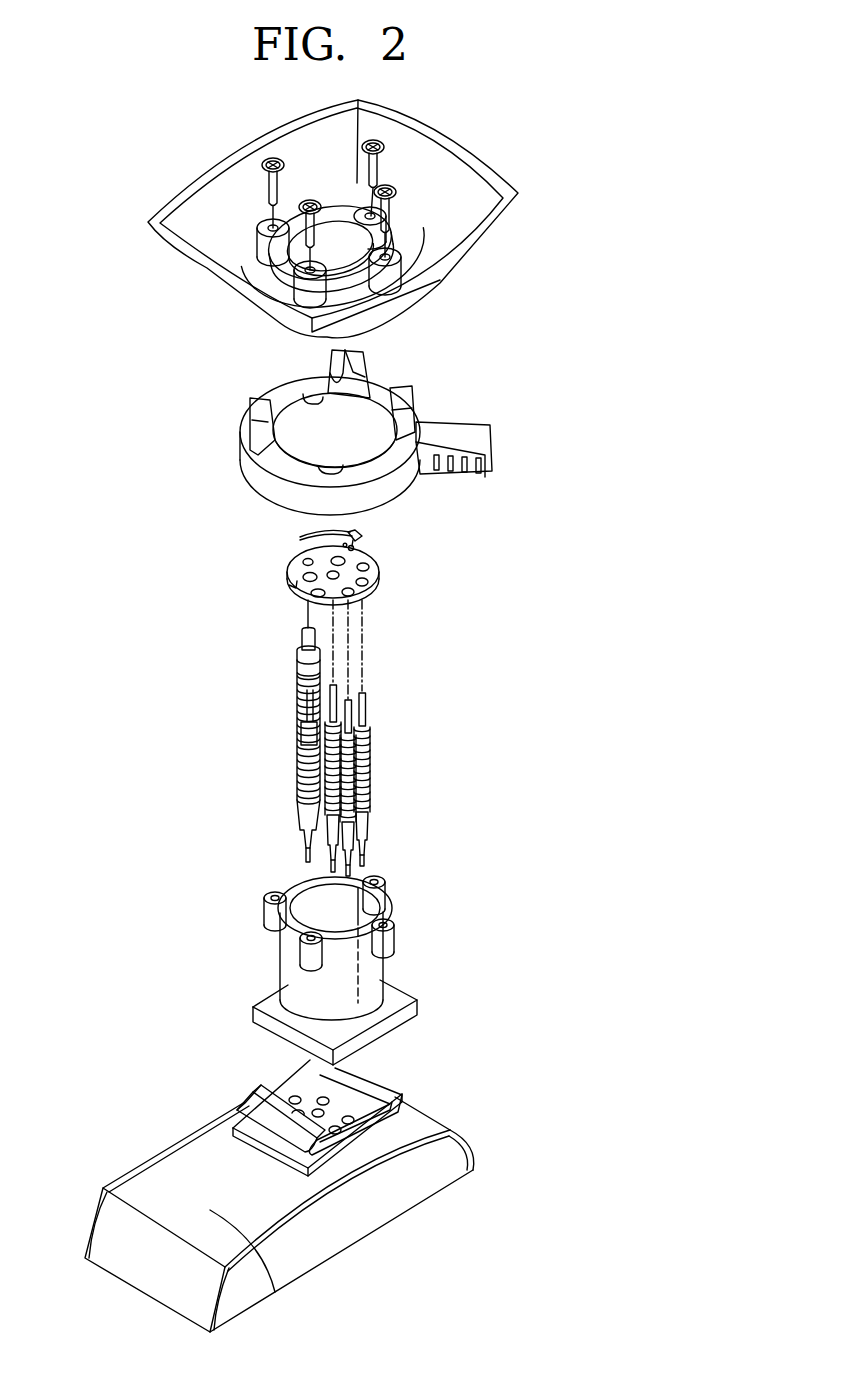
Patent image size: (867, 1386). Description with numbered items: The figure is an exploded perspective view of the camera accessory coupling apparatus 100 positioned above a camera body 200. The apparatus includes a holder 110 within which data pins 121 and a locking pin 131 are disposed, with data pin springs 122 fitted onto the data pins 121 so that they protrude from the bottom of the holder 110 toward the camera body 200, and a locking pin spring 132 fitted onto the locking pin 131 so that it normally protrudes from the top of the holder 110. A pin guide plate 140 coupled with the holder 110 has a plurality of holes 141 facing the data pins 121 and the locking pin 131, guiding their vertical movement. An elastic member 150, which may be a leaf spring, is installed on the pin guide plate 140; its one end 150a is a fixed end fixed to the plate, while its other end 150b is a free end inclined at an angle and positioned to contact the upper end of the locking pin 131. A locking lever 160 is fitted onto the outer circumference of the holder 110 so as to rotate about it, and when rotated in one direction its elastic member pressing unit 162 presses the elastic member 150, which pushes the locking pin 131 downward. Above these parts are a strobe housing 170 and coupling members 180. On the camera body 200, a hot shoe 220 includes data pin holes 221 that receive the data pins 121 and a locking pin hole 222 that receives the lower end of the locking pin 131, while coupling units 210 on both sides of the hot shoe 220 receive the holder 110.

The camera accessory coupling apparatus 100 is at (156, 193).
The holder 110 is at (390, 968).
The data pins 121 is at (366, 707).
The data pin springs 122 is at (372, 745).
The locking pin 131 is at (301, 636).
The locking pin spring 132 is at (297, 677).
The pin guide plate 140 is at (331, 580).
The holes 141 is at (366, 586).
The elastic member 150 is at (334, 531).
The one end of the elastic member 150a is at (357, 534).
The other end of the elastic member 150b is at (300, 537).
The locking lever 160 is at (401, 427).
The elastic member pressing unit 162 is at (366, 362).
The strobe housing 170 is at (428, 292).
The coupling members 180 is at (390, 193).
The camera body 200 is at (157, 1131).
The coupling units 210 is at (252, 1095).
The hot shoe 220 is at (358, 1149).
The data pin holes 221 is at (351, 1125).
The locking pin hole 222 is at (293, 1097).